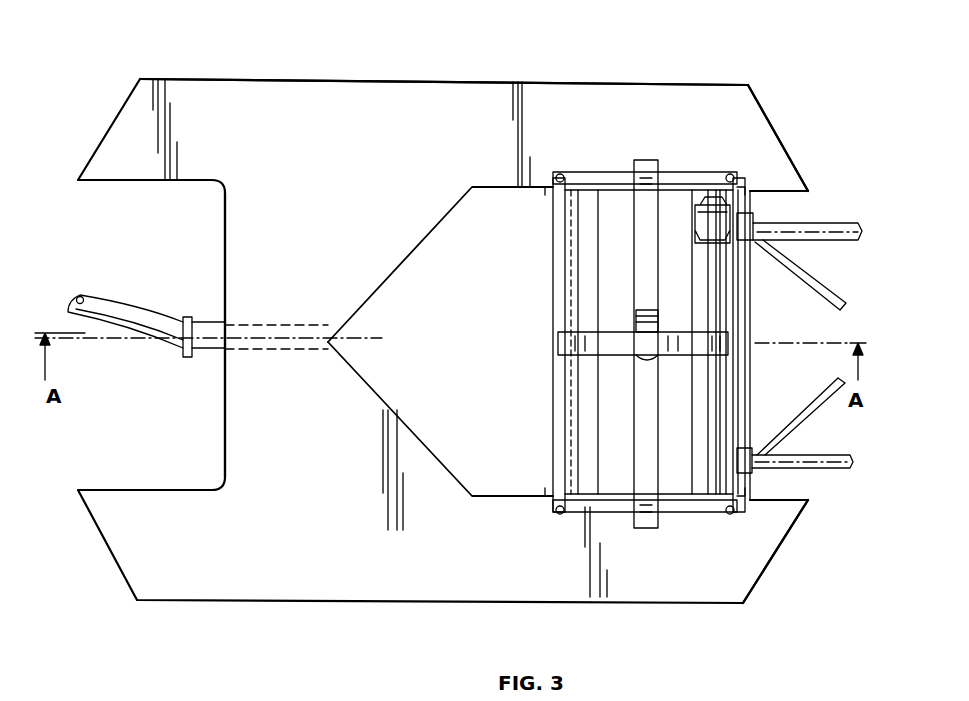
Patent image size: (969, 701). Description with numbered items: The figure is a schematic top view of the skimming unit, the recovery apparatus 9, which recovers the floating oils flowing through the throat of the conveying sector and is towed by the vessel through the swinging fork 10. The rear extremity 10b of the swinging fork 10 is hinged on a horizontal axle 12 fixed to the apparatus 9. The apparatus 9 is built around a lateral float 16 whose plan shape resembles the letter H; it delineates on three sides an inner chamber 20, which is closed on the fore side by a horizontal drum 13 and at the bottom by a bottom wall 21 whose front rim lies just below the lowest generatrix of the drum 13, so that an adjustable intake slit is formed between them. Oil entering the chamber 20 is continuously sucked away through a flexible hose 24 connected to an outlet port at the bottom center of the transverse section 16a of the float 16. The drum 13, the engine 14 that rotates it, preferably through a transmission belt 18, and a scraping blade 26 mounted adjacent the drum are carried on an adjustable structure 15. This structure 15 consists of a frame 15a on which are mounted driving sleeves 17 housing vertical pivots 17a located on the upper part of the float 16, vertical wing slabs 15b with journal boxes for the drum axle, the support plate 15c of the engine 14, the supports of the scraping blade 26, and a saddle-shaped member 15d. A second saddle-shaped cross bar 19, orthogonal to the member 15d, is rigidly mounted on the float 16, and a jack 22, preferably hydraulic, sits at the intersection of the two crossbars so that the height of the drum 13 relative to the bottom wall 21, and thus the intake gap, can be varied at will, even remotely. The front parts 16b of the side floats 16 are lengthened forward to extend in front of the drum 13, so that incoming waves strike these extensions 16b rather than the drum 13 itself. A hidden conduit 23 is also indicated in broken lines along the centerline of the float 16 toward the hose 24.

The recovery apparatus 9 is at (540, 78).
The swinging fork 10 is at (830, 222).
The rear extremity of the swinging fork 10b is at (760, 445).
The horizontal axle 12 is at (747, 322).
The horizontal drum 13 is at (590, 412).
The engine 14 is at (750, 202).
The adjustable structure 15 is at (702, 175).
The frame 15a is at (600, 176).
The vertical wing slabs 15b is at (630, 172).
The support plate 15c is at (748, 258).
The saddle-shaped member 15d is at (558, 348).
The lateral float 16 is at (665, 88).
The transverse section of the float 16a is at (235, 408).
The front parts of the floats 16b is at (790, 152).
The driving sleeves 17 is at (556, 176).
The vertical pivots 17a is at (545, 190).
The transmission belt 18 is at (700, 200).
The second saddle-shaped cross bar 19 is at (640, 440).
The inner chamber 20 is at (385, 383).
The bottom wall 21 is at (455, 215).
The jack 22 is at (630, 322).
The hidden conduit 23 is at (302, 325).
The flexible hose 24 is at (148, 322).
The scraping blade 26 is at (558, 282).